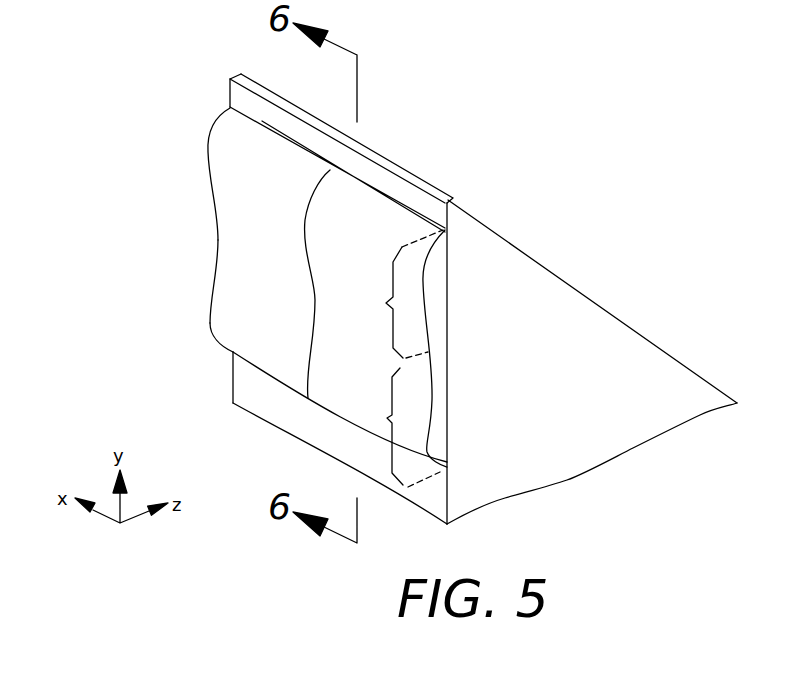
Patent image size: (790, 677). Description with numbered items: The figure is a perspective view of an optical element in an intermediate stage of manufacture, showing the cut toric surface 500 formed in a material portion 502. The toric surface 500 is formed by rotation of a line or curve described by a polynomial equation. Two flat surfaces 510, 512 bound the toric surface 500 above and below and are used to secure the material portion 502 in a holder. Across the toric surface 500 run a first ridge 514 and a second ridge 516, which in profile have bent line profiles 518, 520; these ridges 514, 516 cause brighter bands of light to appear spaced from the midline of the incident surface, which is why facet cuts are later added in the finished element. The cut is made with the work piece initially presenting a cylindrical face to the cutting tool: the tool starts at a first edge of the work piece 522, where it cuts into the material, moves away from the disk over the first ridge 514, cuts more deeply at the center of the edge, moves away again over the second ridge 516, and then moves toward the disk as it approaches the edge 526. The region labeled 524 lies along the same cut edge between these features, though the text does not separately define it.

The toric surface 500 is at (233, 178).
The material portion 502 is at (580, 179).
The flat surface 510 is at (418, 200).
The flat surface 512 is at (238, 394).
The first ridge 514 is at (210, 137).
The second ridge 516 is at (210, 313).
The bent line profile 518 is at (391, 294).
The bent line profile 520 is at (387, 418).
The first edge of the work piece 522 is at (230, 109).
The upper left edge 524 is at (217, 235).
The edge 526 is at (232, 354).